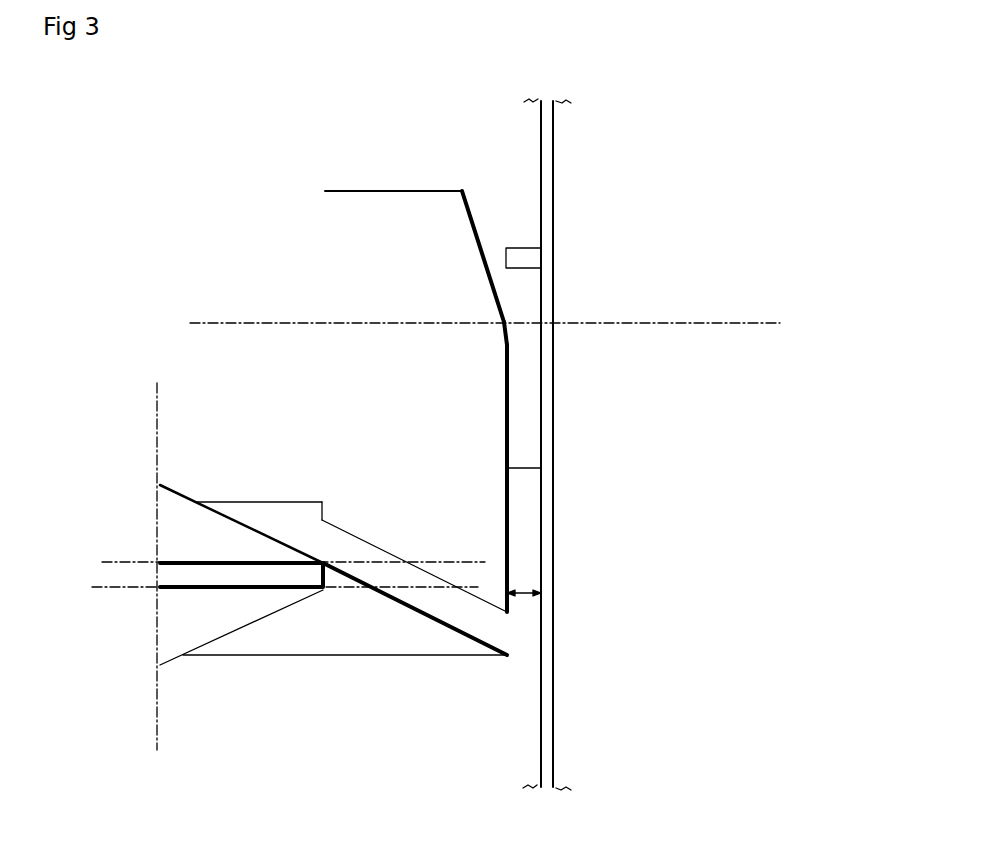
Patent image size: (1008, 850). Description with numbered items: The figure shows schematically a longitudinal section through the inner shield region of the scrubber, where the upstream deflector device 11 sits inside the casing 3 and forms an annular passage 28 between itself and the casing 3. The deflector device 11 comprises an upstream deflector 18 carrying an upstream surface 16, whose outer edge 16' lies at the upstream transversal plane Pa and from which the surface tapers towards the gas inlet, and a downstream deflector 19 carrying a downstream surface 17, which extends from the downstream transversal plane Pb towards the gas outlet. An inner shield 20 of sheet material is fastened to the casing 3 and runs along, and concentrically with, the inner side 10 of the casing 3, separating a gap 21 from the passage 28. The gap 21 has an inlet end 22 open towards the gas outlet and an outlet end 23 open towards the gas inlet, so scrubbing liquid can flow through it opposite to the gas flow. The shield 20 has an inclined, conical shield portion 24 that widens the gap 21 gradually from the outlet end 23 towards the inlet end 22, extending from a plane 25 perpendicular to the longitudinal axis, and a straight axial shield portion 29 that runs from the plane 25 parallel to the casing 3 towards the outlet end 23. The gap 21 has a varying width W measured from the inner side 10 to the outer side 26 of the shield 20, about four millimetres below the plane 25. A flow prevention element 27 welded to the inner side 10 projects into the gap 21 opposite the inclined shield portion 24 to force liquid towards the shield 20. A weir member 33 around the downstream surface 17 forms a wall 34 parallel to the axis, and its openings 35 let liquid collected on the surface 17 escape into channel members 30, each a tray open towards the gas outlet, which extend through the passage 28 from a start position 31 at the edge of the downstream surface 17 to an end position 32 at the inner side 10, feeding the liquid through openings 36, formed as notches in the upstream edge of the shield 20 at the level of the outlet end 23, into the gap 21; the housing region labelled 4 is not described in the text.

The casing 3 is at (543, 145).
The housing 4 is at (368, 147).
The inner side of the casing 10 is at (527, 178).
The upstream deflector device 11 is at (297, 618).
The upstream surface 16 is at (333, 642).
The outer edge of the upstream surface 16' is at (509, 701).
The downstream surface 17 is at (173, 485).
The upstream deflector 18 is at (195, 617).
The downstream deflector 19 is at (193, 530).
The inner shield 20 is at (497, 307).
The gap 21 is at (537, 467).
The inlet end of the gap 22 is at (503, 195).
The outlet end of the gap 23 is at (523, 657).
The inclined shield portion 24 is at (460, 208).
The plane 25 is at (610, 323).
The outer side of the inner shield 26 is at (507, 370).
The flow prevention element 27 is at (525, 257).
The annular passage 28 is at (462, 530).
The axial shield portion 29 is at (507, 420).
The channel member 30 is at (400, 603).
The start position 31 is at (325, 545).
The end position 32 is at (506, 655).
The weir member 33 is at (280, 502).
The wall 34 is at (325, 510).
The openings of the weir member 35 is at (320, 543).
The openings of the inner shield 36 is at (505, 630).
The width of the gap W is at (521, 593).
The upstream transversal plane Pa is at (132, 587).
The downstream transversal plane Pb is at (130, 562).